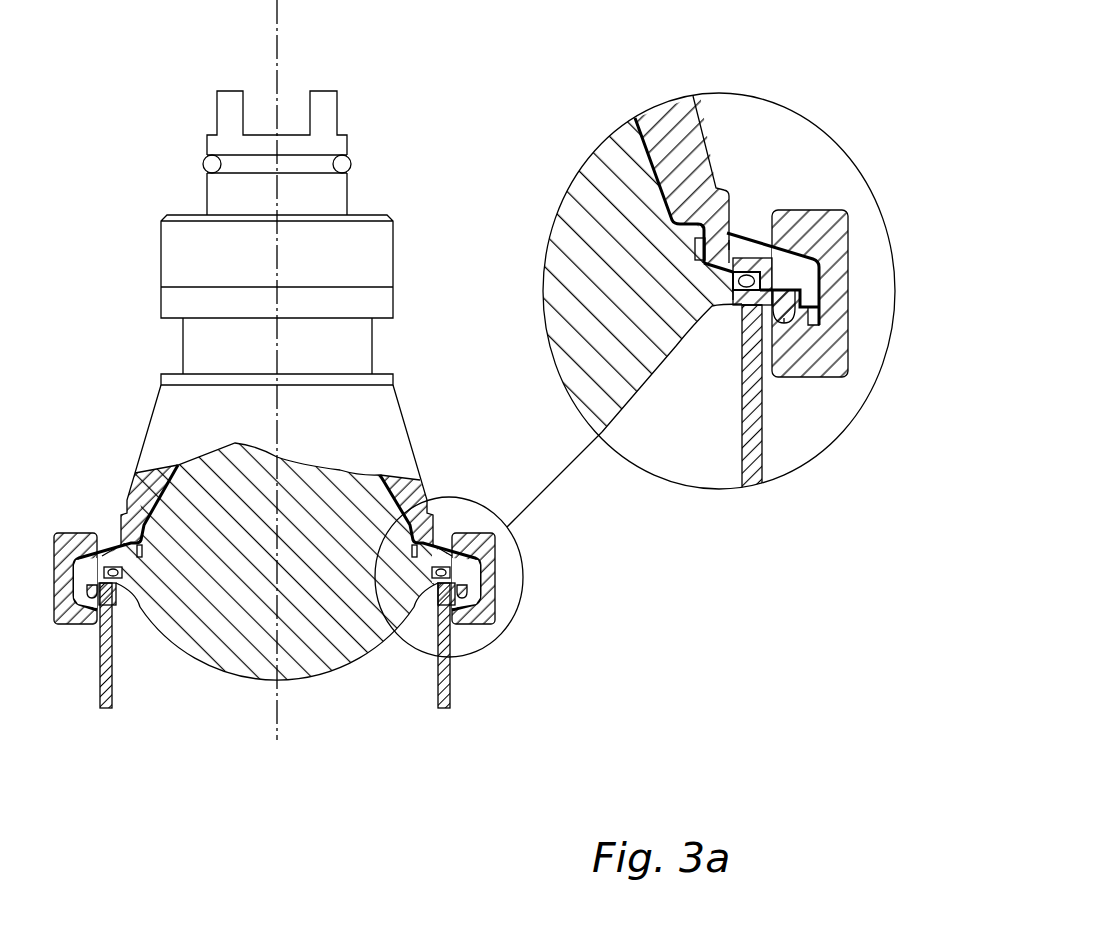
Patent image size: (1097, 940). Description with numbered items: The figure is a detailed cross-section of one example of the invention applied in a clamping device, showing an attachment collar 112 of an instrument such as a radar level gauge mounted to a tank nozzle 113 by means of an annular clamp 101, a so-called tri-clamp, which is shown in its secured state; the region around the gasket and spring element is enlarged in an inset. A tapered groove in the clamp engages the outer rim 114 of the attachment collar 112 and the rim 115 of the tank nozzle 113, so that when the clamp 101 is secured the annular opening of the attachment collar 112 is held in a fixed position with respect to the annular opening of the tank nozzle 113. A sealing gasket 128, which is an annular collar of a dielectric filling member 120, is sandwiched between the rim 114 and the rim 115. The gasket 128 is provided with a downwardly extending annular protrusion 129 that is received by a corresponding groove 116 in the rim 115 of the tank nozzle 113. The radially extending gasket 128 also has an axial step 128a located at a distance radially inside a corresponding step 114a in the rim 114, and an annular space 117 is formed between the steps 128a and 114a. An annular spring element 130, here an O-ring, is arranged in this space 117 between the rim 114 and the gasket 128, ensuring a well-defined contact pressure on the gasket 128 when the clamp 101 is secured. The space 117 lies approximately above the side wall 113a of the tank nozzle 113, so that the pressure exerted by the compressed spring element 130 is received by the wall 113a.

The annular clamp 101 is at (495, 600).
The attachment collar 112 is at (392, 428).
The tank nozzle 113 is at (450, 688).
The side wall 113a is at (758, 463).
The rim 114 is at (820, 212).
The step 114a is at (745, 308).
The rim 115 is at (820, 327).
The groove 116 is at (795, 330).
The annular space 117 is at (730, 245).
The dielectric filling member 120 is at (240, 680).
The sealing gasket 128 is at (822, 250).
The axial step 128a is at (700, 310).
The annular protrusion 129 is at (805, 330).
The spring element 130 is at (766, 235).